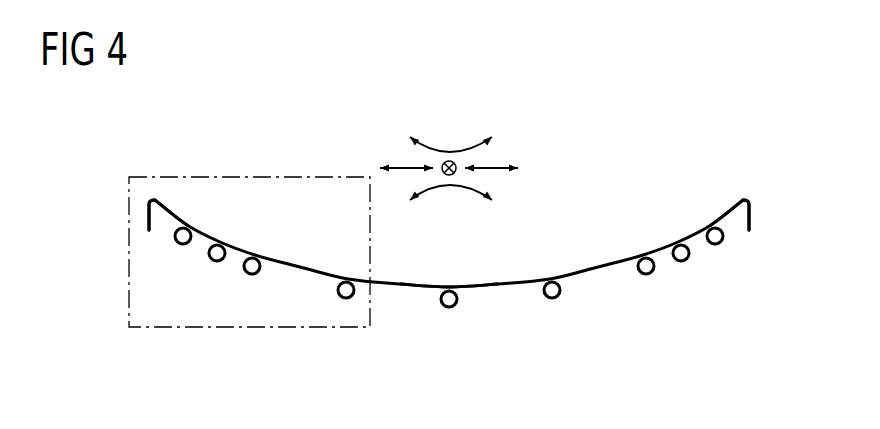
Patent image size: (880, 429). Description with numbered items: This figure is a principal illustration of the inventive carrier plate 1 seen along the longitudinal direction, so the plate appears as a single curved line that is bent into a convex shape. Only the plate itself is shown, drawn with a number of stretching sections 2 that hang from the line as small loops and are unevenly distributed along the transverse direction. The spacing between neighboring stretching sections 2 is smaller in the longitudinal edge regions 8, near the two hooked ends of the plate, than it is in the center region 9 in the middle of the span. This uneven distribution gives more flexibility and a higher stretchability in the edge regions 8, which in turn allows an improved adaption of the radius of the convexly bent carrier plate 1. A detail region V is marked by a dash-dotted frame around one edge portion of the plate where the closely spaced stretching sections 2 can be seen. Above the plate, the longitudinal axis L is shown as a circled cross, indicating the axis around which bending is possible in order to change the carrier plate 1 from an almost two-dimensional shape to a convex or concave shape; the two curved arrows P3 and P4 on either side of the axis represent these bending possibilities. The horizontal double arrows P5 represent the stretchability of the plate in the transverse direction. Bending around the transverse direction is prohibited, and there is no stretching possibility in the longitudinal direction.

The carrier plate 1 is at (588, 182).
The stretching sections 2 is at (179, 249).
The longitudinal edge regions 8 is at (222, 223).
The center region 9 is at (473, 270).
The detail region V is at (168, 177).
The longitudinal axis L is at (447, 153).
The arrow P3 is at (468, 142).
The arrow P4 is at (450, 183).
The arrows P5 is at (405, 165).